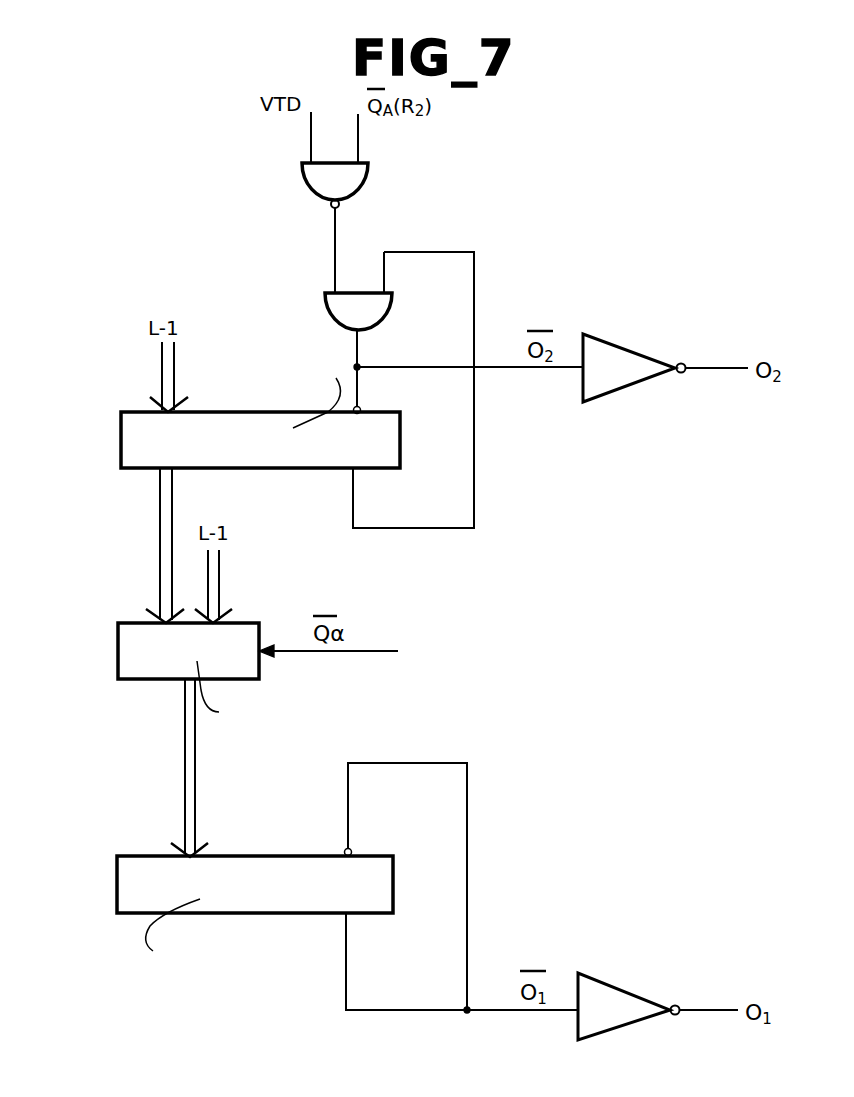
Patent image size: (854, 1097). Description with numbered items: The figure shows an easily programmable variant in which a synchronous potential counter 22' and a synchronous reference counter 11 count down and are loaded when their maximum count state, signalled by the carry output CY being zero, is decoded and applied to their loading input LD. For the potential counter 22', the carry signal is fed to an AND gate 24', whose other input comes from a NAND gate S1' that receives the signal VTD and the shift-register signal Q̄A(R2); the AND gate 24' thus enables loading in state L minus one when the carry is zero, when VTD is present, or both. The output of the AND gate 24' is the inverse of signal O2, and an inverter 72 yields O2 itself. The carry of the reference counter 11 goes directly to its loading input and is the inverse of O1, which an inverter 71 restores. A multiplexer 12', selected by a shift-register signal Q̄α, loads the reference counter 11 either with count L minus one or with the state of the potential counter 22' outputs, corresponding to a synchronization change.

The NAND gate S1' is at (309, 185).
The AND gate 24' is at (332, 311).
The synchronous potential counter 22' is at (239, 412).
The multiplexer 12' is at (218, 673).
The reference counter 11 is at (117, 886).
The inverter 72 is at (620, 398).
The inverter 71 is at (614, 1033).